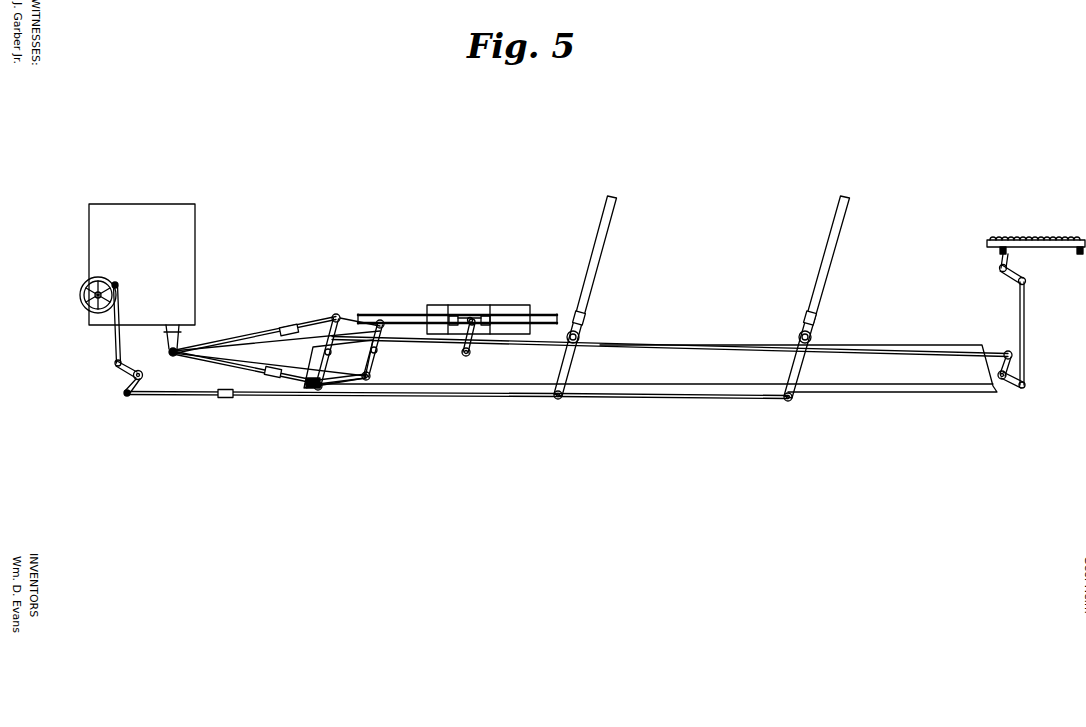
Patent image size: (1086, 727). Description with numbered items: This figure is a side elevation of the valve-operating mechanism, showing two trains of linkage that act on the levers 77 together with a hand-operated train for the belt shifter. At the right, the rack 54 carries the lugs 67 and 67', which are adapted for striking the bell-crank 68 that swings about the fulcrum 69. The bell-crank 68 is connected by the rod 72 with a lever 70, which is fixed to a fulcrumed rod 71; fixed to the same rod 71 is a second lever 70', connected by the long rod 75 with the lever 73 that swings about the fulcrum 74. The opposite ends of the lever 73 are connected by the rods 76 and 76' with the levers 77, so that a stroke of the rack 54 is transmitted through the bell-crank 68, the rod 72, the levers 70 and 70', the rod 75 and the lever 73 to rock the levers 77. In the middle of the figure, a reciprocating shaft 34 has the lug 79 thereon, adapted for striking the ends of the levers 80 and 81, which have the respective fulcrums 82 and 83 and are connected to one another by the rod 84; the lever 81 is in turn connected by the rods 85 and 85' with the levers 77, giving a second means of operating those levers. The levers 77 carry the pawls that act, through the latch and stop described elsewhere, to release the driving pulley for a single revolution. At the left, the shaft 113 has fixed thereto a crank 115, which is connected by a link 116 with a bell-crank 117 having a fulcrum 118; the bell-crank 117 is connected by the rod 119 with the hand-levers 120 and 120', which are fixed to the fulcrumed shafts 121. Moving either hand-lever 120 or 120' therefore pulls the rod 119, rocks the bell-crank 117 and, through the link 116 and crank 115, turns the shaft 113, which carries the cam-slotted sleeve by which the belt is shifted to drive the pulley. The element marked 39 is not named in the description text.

The reciprocating shaft 34 is at (520, 305).
The bar 39 is at (400, 313).
The rack 54 is at (1030, 223).
The lug 67 is at (985, 260).
The lug 67' is at (1066, 266).
The bell-crank 68 is at (1012, 261).
The fulcrum 69 is at (1000, 273).
The lever 70 is at (1016, 398).
The lever 70' is at (1031, 363).
The fulcrumed rod 71 is at (1001, 392).
The rod 72 is at (1026, 330).
The lever 73 is at (330, 390).
The fulcrum 74 is at (330, 352).
The rod 75 is at (878, 345).
The rod 76 is at (245, 390).
The rod 76' is at (254, 328).
The levers 77 is at (168, 348).
The lug 79 is at (470, 312).
The lever 80 is at (471, 352).
The lever 81 is at (369, 380).
The fulcrum 82 is at (463, 358).
The fulcrum 83 is at (378, 348).
The rod 84 is at (418, 341).
The rod 85 is at (325, 335).
The rod 85' is at (300, 406).
The shaft 113 is at (82, 295).
The crank 115 is at (120, 286).
The link 116 is at (113, 340).
The bell-crank 117 is at (116, 369).
The fulcrum 118 is at (144, 375).
The rod 119 is at (170, 395).
The hand-lever 120 is at (596, 297).
The hand-lever 120' is at (810, 298).
The fulcrumed shafts 121 is at (580, 338).